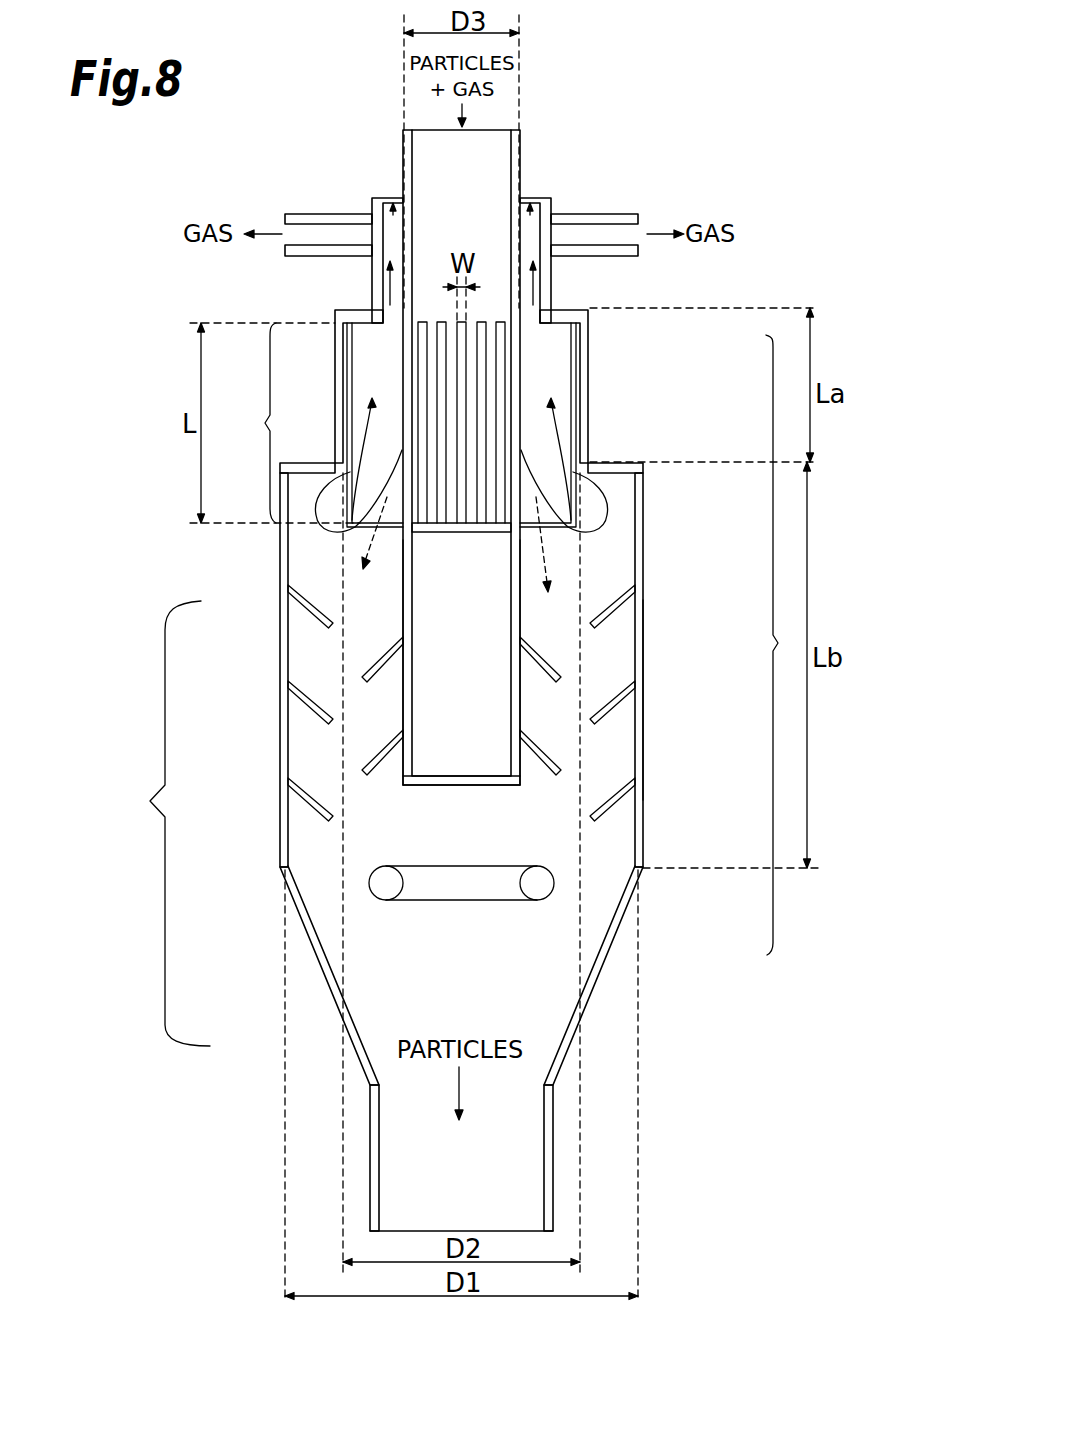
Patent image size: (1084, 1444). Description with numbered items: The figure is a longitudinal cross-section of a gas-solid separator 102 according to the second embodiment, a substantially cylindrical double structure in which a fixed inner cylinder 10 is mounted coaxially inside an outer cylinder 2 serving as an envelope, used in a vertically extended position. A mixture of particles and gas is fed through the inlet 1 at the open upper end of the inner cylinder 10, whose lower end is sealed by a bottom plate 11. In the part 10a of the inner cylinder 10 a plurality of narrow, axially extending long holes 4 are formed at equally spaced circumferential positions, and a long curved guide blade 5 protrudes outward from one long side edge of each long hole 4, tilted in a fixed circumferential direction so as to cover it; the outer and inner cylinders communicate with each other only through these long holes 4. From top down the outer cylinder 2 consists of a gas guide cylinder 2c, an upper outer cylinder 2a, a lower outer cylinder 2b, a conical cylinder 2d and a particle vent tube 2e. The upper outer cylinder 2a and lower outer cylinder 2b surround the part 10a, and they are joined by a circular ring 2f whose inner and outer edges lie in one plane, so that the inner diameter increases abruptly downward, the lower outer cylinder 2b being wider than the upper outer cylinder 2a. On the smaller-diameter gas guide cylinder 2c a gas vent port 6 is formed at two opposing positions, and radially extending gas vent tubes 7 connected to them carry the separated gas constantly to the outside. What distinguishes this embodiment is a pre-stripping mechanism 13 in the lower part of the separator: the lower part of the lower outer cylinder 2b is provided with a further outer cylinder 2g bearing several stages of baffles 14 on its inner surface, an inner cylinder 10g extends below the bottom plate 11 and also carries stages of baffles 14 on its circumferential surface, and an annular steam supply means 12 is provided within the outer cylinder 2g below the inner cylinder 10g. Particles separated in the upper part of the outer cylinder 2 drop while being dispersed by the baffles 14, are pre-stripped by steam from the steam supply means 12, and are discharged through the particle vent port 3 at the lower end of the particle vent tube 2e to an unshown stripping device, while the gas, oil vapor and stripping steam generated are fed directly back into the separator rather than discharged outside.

The inlet 1 is at (493, 142).
The outer cylinder 2 is at (783, 645).
The upper outer cylinder 2a is at (589, 393).
The lower outer cylinder 2b is at (643, 497).
The gas guide cylinder 2c is at (556, 268).
The conical cylinder 2d is at (636, 912).
The particle vent tube 2e is at (551, 1103).
The circular ring 2f is at (607, 463).
The outer cylinder 2g is at (643, 705).
The particle vent port 3 is at (516, 1233).
The long holes 4 is at (473, 322).
The guide blade 5 is at (353, 372).
The gas vent port 6 is at (392, 205).
The gas vent tubes 7 is at (330, 214).
The inner cylinder 10 is at (520, 190).
The part in which the long holes are formed 10a is at (243, 423).
The inner cylinder 10g is at (523, 710).
The bottom plate 11 is at (485, 786).
The steam supply means 12 is at (386, 903).
The pre-stripping mechanism 13 is at (154, 823).
The baffles 14 is at (313, 717).
The particle separating apparatus 102 is at (700, 157).